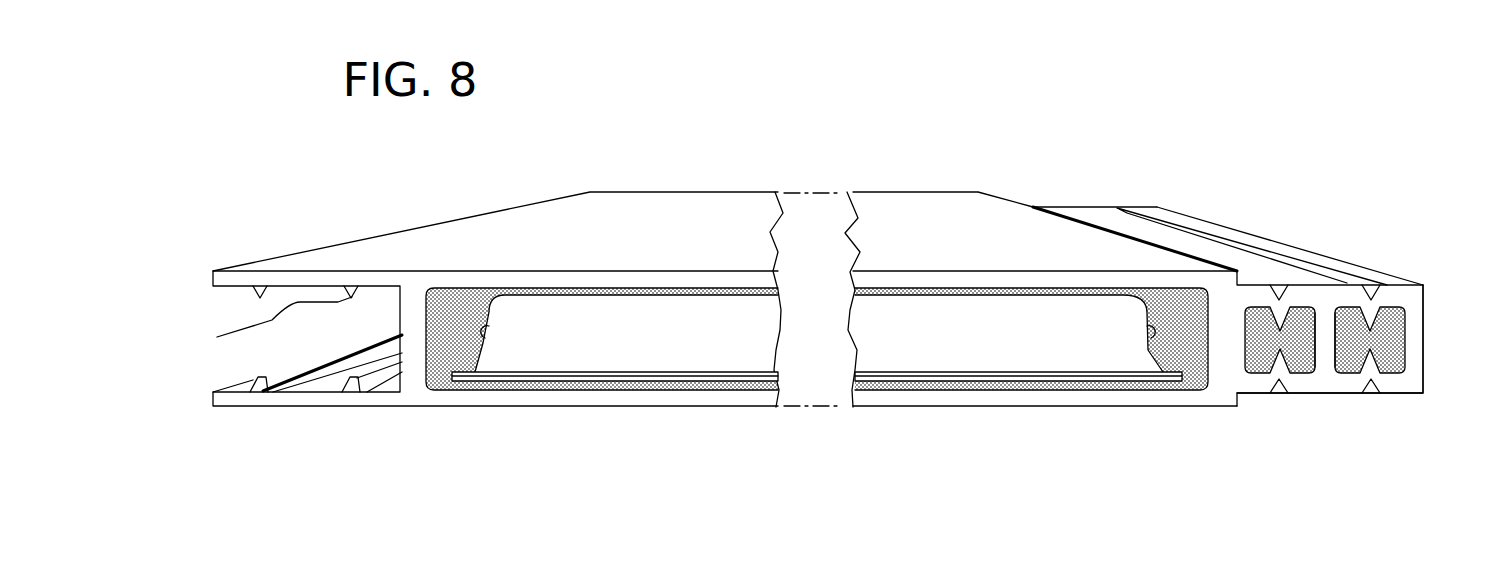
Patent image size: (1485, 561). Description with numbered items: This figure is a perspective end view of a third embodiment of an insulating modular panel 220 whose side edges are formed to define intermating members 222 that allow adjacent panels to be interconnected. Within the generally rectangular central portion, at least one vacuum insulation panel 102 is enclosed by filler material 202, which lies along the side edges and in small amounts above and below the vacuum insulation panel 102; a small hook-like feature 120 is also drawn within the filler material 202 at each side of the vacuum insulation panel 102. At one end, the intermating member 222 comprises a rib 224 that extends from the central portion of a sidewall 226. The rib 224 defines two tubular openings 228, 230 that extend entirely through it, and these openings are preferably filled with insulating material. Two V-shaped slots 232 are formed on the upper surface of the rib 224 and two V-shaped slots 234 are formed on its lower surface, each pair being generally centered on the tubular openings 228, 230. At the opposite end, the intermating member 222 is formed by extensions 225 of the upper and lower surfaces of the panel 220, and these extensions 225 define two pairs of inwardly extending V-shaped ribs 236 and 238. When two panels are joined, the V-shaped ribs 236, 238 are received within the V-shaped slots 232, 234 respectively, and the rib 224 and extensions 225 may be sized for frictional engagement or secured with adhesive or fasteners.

The insulating panel 220 is at (1050, 147).
The intermating members 222 is at (1270, 233).
The extensions 225 is at (372, 250).
The filler material 202 is at (458, 302).
The hook 120 is at (490, 327).
The vacuum insulation panel 102 is at (713, 338).
The V-shaped ribs 236 is at (257, 292).
The V-shaped ribs 238 is at (367, 373).
The sidewall 226 is at (1222, 347).
The tubular opening 228 is at (1258, 333).
The rib 224 is at (1318, 345).
The tubular opening 230 is at (1390, 362).
The V-shaped slots 232 is at (1276, 255).
The V-shaped slots 234 is at (1279, 393).